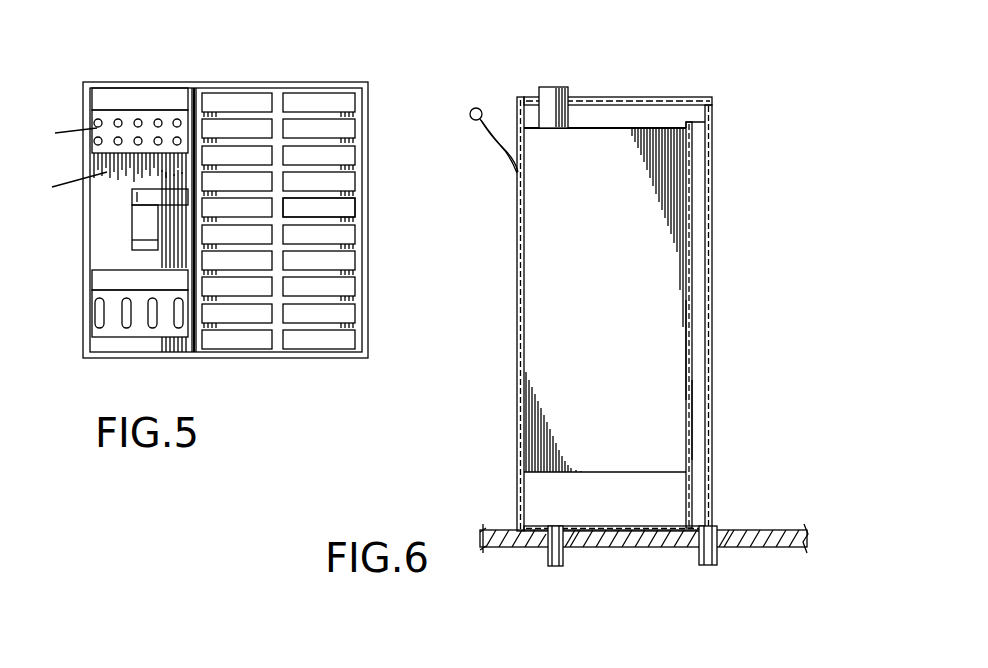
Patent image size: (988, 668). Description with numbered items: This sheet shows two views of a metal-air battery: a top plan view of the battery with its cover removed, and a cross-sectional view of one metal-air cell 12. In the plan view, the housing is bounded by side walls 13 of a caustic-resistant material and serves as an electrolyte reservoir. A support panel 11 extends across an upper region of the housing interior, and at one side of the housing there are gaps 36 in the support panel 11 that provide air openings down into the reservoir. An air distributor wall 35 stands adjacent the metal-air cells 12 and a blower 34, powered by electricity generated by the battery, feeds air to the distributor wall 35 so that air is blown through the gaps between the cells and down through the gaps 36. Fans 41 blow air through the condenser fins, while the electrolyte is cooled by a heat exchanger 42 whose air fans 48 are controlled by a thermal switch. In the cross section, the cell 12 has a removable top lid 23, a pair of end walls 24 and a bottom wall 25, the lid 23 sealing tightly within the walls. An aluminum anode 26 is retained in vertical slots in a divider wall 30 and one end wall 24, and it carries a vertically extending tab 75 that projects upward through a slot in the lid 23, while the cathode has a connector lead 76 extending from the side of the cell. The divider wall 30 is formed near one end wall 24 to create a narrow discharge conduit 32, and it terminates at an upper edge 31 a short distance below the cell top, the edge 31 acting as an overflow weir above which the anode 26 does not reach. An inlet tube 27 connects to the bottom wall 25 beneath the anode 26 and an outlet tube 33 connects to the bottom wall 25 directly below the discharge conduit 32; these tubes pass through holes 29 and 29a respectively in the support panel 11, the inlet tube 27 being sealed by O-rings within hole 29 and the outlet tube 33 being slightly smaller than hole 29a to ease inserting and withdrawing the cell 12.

In FIG. 6, the support panel 11 is at (790, 536).
In FIG. 5, the metal-air cell 12 is at (346, 128).
In FIG. 6, the metal-air cell 12 is at (613, 291).
In FIG. 5, the side walls 13 is at (368, 296).
In FIG. 6, the top lid 23 is at (626, 100).
In FIG. 6, the end walls 24 is at (712, 198).
In FIG. 6, the bottom wall 25 is at (595, 527).
In FIG. 6, the anode 26 is at (625, 322).
In FIG. 6, the inlet tube 27 is at (547, 557).
In FIG. 6, the hole 29 is at (577, 548).
In FIG. 6, the hole 29a is at (718, 529).
In FIG. 6, the divider wall 30 is at (694, 414).
In FIG. 6, the upper edge 31 is at (692, 124).
In FIG. 6, the discharge conduit 32 is at (703, 347).
In FIG. 6, the outlet tube 33 is at (718, 553).
In FIG. 5, the blower 34 is at (145, 222).
In FIG. 5, the air distributor wall 35 is at (195, 95).
In FIG. 5, the gaps 36 is at (352, 215).
In FIG. 5, the fans 41 is at (138, 92).
In FIG. 5, the heat exchanger 42 is at (165, 325).
In FIG. 5, the air fans 48 is at (108, 277).
In FIG. 6, the tab 75 is at (553, 87).
In FIG. 6, the connector lead 76 is at (474, 120).